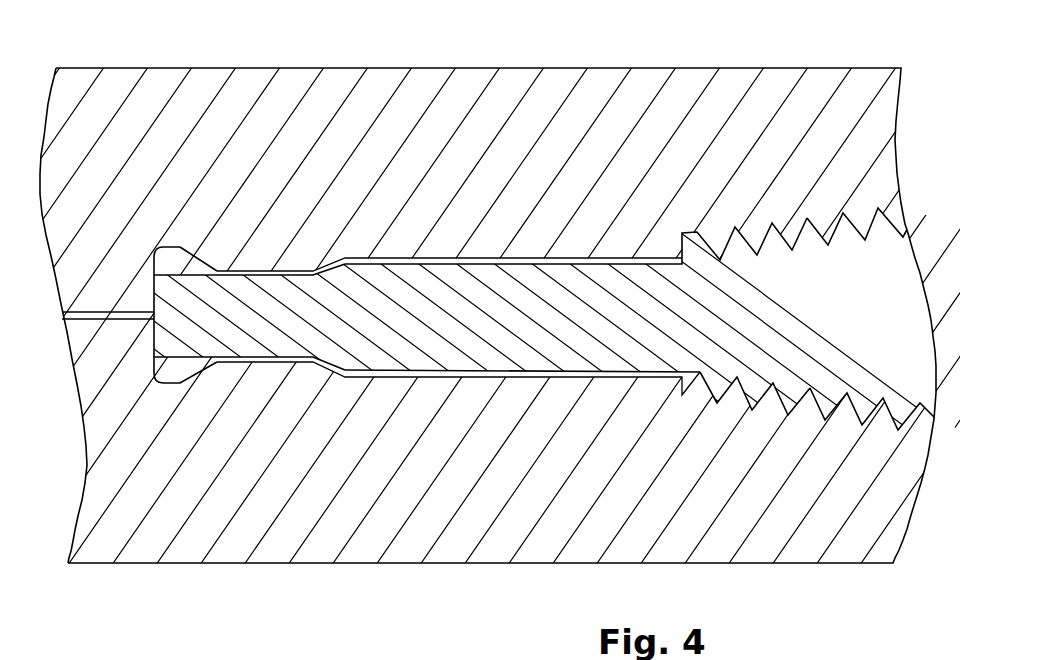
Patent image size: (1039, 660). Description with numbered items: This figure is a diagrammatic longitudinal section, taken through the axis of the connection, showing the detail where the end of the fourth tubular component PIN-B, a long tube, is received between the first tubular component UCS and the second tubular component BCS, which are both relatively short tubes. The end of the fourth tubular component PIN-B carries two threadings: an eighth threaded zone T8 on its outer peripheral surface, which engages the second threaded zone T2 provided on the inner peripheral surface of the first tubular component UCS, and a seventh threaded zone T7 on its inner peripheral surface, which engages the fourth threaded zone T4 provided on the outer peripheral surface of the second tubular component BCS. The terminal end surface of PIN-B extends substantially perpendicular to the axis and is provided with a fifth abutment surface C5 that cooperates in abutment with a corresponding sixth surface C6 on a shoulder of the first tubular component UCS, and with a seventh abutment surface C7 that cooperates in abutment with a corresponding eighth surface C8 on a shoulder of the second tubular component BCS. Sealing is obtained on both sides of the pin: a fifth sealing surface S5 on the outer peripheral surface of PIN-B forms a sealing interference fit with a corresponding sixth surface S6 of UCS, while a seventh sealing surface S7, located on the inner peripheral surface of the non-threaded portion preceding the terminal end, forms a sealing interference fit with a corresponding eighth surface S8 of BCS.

The first tubular component UCS is at (208, 135).
The second tubular component BCS is at (248, 468).
The fourth tubular component PIN-B is at (857, 327).
The fifth abutment surface C5 is at (150, 282).
The sixth surface C6 is at (140, 303).
The seventh abutment surface C7 is at (154, 347).
The eighth surface C8 is at (193, 362).
The fifth sealing surface S5 is at (433, 265).
The sixth surface S6 is at (378, 266).
The seventh sealing surface S7 is at (453, 372).
The eighth surface S8 is at (390, 363).
The second threaded zone T2 is at (752, 232).
The eighth threaded zone T8 is at (835, 210).
The seventh threaded zone T7 is at (753, 390).
The fourth threaded zone T4 is at (840, 413).